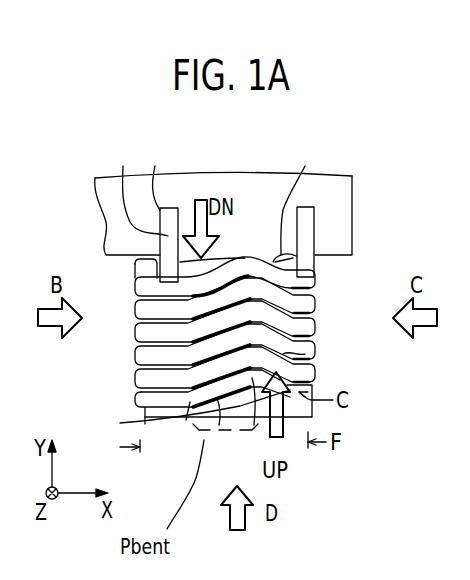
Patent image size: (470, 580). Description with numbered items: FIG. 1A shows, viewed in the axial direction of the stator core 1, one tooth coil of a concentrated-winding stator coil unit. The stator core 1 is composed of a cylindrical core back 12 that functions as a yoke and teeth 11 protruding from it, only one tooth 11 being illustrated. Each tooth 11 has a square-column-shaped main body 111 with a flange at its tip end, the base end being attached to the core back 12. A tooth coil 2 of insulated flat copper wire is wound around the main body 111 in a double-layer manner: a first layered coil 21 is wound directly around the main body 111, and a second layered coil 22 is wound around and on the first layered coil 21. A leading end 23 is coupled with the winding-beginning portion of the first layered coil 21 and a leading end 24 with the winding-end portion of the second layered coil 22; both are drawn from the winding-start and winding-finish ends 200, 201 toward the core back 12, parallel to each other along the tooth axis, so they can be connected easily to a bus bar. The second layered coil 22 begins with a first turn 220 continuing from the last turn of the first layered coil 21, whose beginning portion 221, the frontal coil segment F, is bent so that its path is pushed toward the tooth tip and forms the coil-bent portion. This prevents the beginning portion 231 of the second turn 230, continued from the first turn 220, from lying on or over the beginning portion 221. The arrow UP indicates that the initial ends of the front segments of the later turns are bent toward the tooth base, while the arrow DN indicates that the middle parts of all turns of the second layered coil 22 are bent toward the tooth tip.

The stator core 1 is at (284, 151).
The tooth coil 2 is at (132, 356).
The tooth 11 is at (310, 451).
The core back 12 is at (340, 233).
The first layered coil 21 is at (309, 205).
The second layered coil 22 is at (133, 404).
The leading end 23 is at (160, 208).
The leading end 24 is at (304, 212).
The main body 111 is at (257, 205).
The winding-start end 200 is at (128, 206).
The winding-finish end 201 is at (308, 268).
The first turn 220 is at (142, 417).
The beginning portion 221 is at (192, 414).
The second turn 230 is at (212, 418).
The beginning portion 231 is at (305, 354).